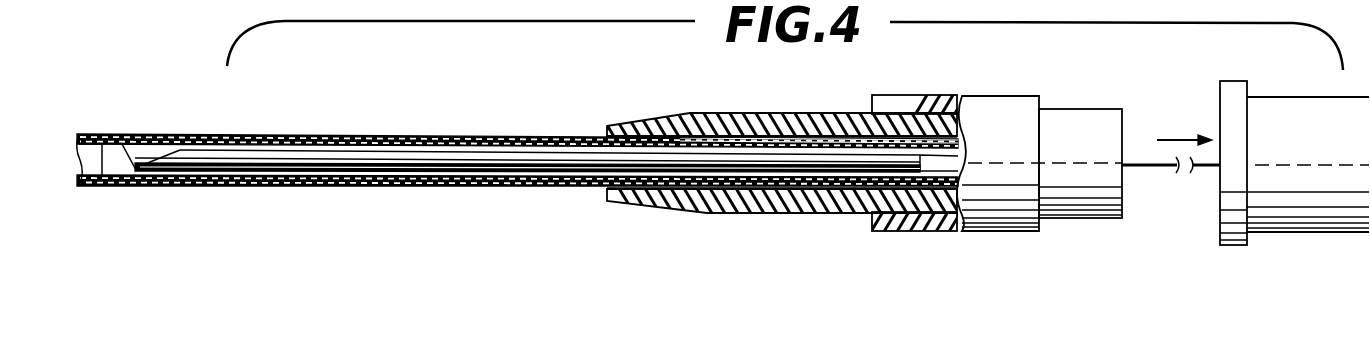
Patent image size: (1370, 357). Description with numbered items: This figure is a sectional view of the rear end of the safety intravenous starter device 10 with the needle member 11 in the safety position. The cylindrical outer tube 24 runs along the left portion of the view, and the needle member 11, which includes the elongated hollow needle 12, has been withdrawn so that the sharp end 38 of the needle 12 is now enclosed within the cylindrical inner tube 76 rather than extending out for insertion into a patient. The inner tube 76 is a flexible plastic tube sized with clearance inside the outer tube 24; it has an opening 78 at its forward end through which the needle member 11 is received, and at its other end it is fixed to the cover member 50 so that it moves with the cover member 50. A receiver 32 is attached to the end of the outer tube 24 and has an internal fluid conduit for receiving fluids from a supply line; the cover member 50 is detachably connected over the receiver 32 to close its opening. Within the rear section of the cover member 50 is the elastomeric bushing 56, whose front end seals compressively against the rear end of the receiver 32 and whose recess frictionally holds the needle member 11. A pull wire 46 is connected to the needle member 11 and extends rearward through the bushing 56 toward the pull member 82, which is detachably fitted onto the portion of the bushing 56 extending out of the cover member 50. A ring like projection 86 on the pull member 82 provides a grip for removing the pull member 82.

The safety intravenous starter device 10 is at (613, 212).
The outer tube 24 is at (90, 135).
The opening 78 is at (95, 165).
The sharp end 38 is at (118, 136).
The needle member 11 is at (302, 160).
The needle 12 is at (445, 160).
The inner tube 76 is at (750, 187).
The receiver 32 is at (829, 208).
The cover member 50 is at (990, 223).
The elastomeric bushing 56 is at (1083, 212).
The pull wire 46 is at (1132, 160).
The ring like projection 86 is at (1230, 246).
The pull member 82 is at (1290, 224).